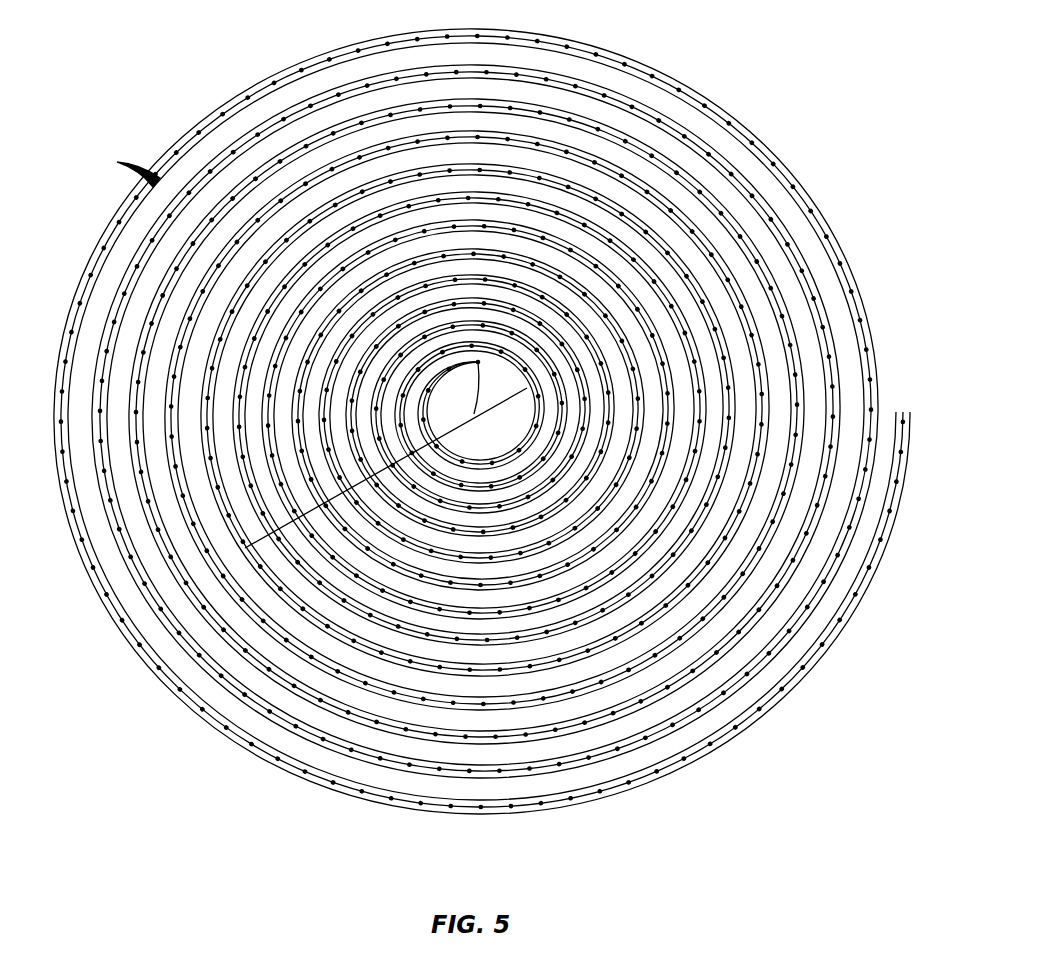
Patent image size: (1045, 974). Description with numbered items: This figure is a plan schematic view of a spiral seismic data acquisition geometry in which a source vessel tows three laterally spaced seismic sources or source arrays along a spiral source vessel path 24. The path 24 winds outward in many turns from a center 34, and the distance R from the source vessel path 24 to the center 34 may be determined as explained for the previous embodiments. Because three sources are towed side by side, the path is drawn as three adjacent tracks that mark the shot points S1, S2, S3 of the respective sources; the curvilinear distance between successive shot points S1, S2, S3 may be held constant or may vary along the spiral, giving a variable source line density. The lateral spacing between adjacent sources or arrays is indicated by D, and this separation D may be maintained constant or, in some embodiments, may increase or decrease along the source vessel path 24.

The spiral source vessel path 24 is at (190, 324).
The shot point S1 is at (896, 412).
The shot point S2 is at (903, 412).
The shot point S3 is at (911, 412).
The lateral spacing between adjacent sources D is at (125, 168).
The center 34 is at (476, 416).
The distance from source vessel path to center R is at (504, 402).